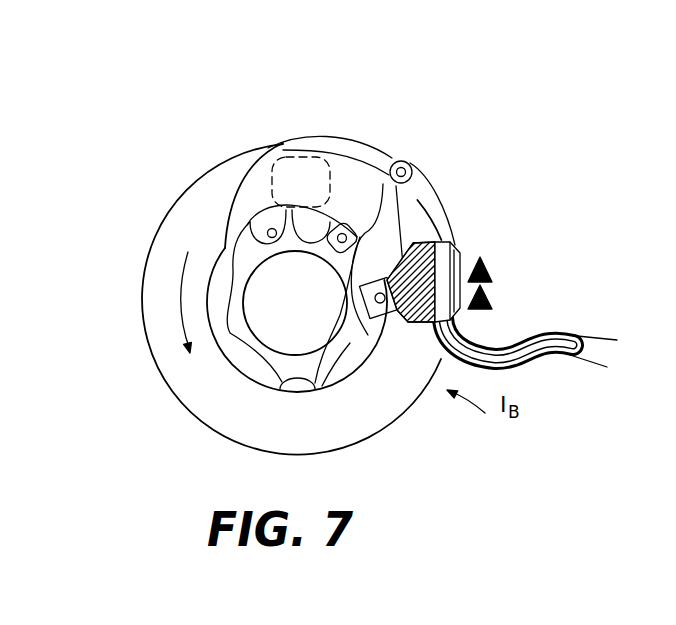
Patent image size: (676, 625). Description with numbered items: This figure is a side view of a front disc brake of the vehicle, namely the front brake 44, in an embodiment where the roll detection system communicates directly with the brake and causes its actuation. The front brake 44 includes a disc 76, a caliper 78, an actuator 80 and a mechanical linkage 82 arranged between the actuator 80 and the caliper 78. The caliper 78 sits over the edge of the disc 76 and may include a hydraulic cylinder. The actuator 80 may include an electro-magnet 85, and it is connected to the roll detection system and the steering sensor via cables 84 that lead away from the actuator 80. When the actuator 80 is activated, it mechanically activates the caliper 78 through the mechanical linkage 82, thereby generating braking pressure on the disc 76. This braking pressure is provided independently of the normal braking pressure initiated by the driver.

The front brake 44 is at (160, 146).
The disc 76 is at (183, 235).
The caliper 78 is at (296, 153).
The mechanical linkage 82 is at (415, 146).
The electro-magnet 85 is at (455, 240).
The actuator 80 is at (455, 257).
The cables 84 is at (544, 331).